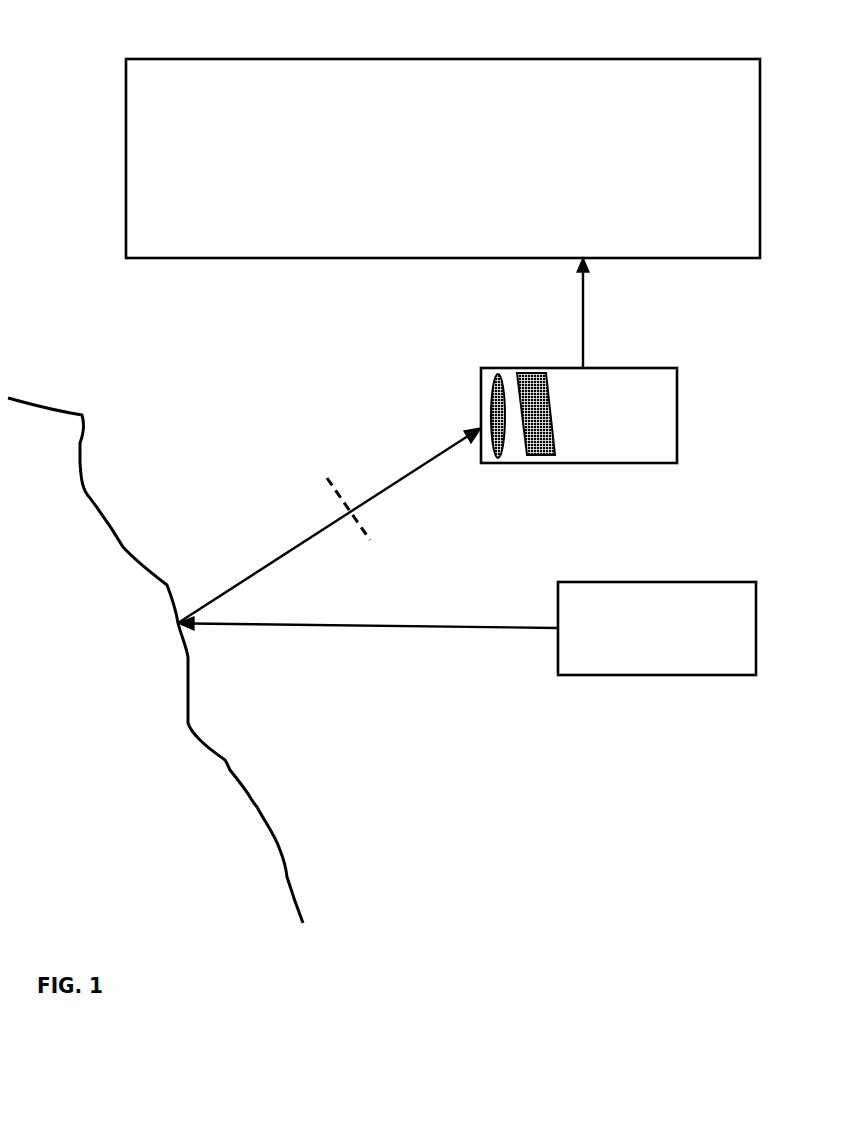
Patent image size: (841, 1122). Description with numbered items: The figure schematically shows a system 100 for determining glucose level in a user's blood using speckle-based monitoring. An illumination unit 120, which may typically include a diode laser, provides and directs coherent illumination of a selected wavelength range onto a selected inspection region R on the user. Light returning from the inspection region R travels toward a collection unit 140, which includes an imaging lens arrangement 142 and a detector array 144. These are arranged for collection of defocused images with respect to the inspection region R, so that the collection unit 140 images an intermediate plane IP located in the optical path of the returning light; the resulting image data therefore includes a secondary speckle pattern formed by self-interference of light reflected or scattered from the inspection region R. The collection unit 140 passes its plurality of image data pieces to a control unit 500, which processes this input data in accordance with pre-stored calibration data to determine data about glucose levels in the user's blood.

The system 100 is at (70, 88).
The control unit 500 is at (443, 158).
The collection unit 140 is at (579, 360).
The imaging lens arrangement 142 is at (480, 400).
The detector array 144 is at (537, 435).
The illumination unit 120 is at (467, 628).
The inspection region R is at (175, 623).
The intermediate plane IP is at (327, 478).